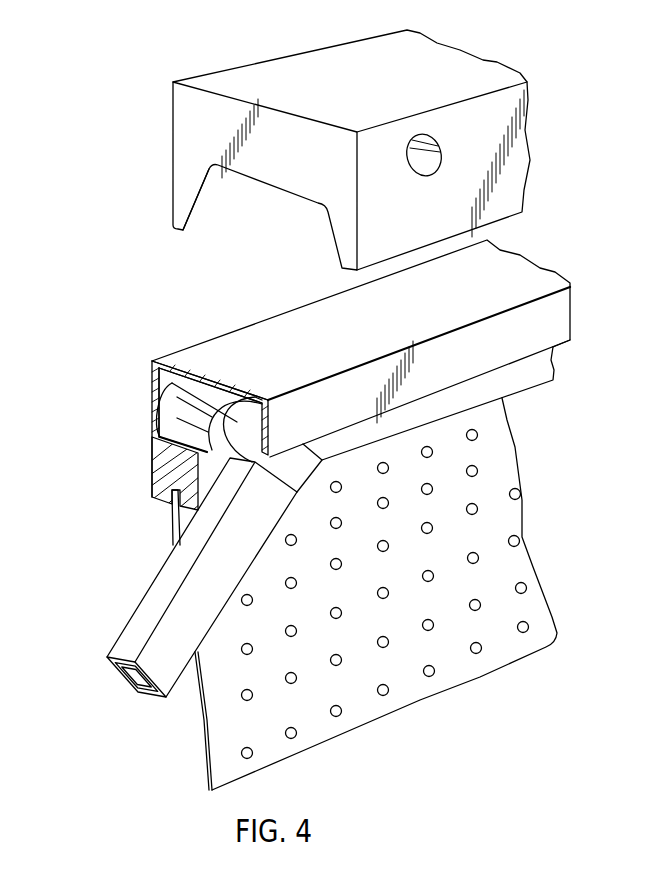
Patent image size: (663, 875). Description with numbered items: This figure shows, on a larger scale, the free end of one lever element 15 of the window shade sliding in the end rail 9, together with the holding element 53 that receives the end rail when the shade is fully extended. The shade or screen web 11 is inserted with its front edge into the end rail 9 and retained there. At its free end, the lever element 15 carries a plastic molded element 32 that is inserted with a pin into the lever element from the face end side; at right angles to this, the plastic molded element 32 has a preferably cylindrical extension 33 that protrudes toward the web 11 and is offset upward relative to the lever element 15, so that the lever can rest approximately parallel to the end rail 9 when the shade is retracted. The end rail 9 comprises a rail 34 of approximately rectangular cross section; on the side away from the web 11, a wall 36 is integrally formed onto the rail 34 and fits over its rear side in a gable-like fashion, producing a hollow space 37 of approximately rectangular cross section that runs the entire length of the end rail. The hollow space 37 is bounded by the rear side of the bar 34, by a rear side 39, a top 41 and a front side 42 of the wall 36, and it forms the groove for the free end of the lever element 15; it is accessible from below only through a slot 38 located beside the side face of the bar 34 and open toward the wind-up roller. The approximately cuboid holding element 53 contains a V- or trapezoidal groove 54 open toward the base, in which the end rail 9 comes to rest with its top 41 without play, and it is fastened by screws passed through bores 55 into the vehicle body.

The end rail 9 is at (483, 273).
The shade or screen web 11 is at (207, 755).
The lever element 15 is at (130, 642).
The plastic molded element 32 is at (176, 498).
The cylindrical extension 33 is at (182, 405).
The rail 34 is at (152, 463).
The wall 36 is at (150, 364).
The hollow space 37 is at (165, 361).
The slot 38 is at (212, 428).
The rear side 39 is at (158, 373).
The top 41 is at (207, 378).
The front side 42 is at (483, 348).
The holding element 53 is at (193, 80).
The groove 54 is at (217, 207).
The bore 55 is at (428, 158).